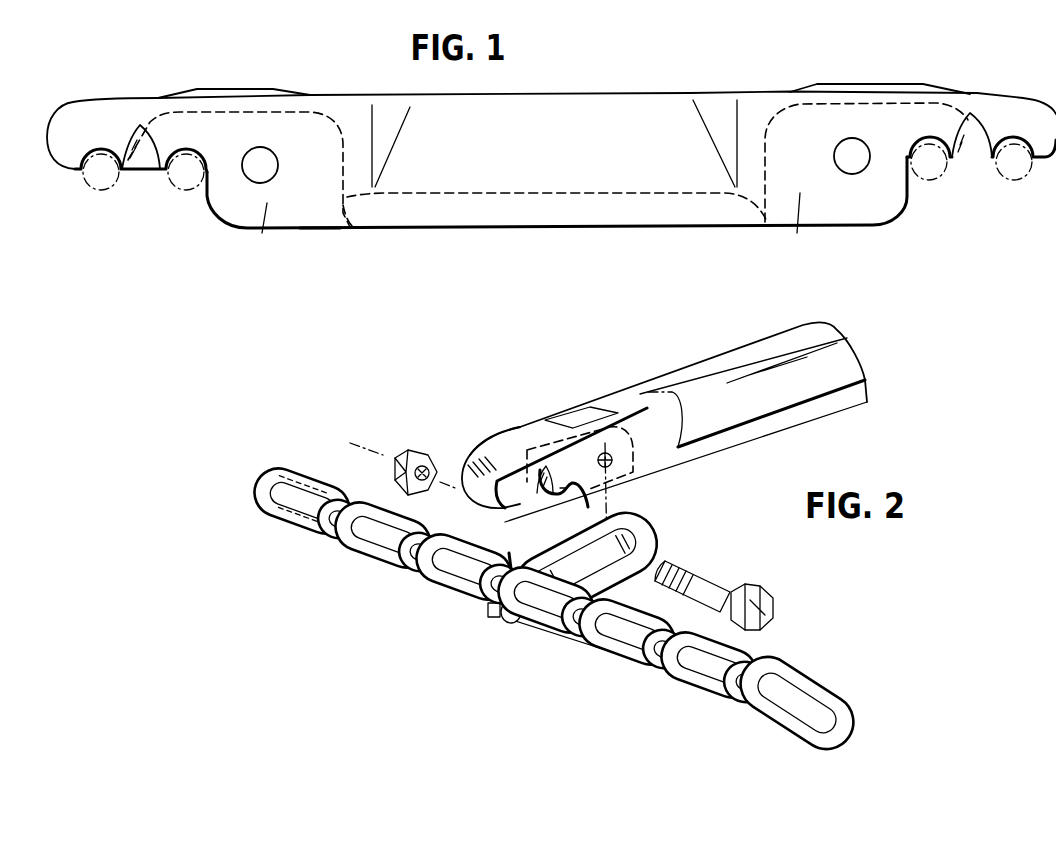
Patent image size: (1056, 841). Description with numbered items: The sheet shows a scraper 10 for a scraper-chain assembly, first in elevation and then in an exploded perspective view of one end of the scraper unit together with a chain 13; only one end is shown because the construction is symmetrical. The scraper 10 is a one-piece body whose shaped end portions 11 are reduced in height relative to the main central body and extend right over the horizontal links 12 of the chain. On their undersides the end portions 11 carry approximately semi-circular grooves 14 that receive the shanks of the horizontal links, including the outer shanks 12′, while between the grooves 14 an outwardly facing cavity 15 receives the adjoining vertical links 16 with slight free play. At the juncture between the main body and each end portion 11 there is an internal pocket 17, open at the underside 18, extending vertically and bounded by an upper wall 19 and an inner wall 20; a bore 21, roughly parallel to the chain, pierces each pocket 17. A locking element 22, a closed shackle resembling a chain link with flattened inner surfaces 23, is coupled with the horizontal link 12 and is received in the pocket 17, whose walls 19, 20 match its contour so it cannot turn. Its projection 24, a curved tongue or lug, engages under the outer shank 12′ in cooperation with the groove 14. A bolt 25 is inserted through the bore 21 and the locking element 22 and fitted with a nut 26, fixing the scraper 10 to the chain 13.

In FIG. 1, the scraper 10 is at (654, 88).
In FIG. 2, the scraper 10 is at (881, 378).
In FIG. 1, the end portions 11 is at (128, 115).
In FIG. 2, the end portions 11 is at (518, 440).
In FIG. 2, the horizontal links 12 is at (548, 636).
In FIG. 2, the outer shanks 12′ is at (496, 607).
In FIG. 2, the chains 13 is at (283, 541).
In FIG. 1, the grooves 14 is at (92, 160).
In FIG. 2, the grooves 14 is at (502, 505).
In FIG. 1, the cavities 15 is at (143, 147).
In FIG. 2, the cavities 15 is at (540, 482).
In FIG. 2, the vertical links 16 is at (431, 583).
In FIG. 1, the pockets 17 is at (527, 229).
In FIG. 2, the pockets 17 is at (563, 489).
In FIG. 1, the underside 18 is at (318, 230).
In FIG. 1, the upper wall 19 is at (260, 110).
In FIG. 1, the inner wall 20 is at (360, 227).
In FIG. 1, the bores 21 is at (275, 162).
In FIG. 2, the bores 21 is at (613, 464).
In FIG. 2, the locking elements 22 is at (647, 550).
In FIG. 2, the inner surfaces 23 is at (603, 570).
In FIG. 2, the projections 24 is at (520, 623).
In FIG. 2, the bolts 25 is at (720, 590).
In FIG. 2, the nuts 26 is at (407, 455).